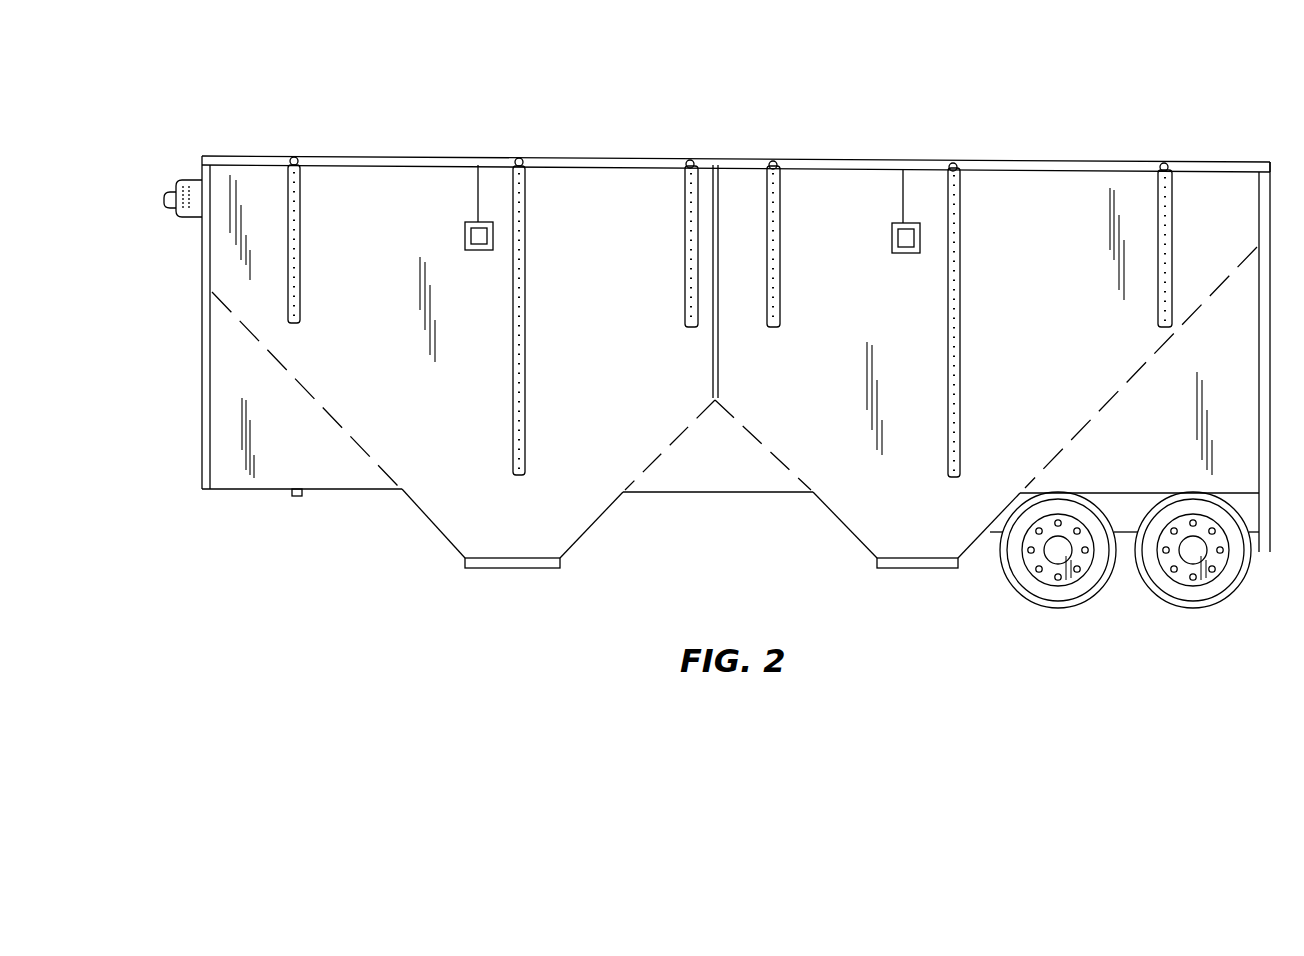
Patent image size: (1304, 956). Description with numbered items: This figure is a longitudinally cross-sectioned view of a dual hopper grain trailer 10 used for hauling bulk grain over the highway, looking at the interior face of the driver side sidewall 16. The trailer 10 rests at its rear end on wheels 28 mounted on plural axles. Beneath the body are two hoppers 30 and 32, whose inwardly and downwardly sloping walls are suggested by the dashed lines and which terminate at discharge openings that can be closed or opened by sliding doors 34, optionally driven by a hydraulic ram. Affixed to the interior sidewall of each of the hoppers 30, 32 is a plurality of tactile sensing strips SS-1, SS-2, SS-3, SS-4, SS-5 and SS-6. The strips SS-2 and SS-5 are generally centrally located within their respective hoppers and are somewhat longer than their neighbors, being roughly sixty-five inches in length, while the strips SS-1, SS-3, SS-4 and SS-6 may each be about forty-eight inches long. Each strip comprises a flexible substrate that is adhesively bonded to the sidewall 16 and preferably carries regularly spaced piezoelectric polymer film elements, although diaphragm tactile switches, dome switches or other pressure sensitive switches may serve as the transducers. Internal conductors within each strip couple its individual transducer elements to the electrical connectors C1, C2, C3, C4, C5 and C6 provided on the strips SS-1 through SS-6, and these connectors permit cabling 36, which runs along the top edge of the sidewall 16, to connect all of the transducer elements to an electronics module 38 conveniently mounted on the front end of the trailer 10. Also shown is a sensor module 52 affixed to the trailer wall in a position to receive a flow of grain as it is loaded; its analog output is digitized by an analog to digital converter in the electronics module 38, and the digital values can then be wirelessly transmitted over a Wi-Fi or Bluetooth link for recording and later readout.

The trailer 10 is at (1030, 115).
The driver side sidewall 16 is at (614, 259).
The wheels 28 is at (1140, 606).
The hopper 30 is at (580, 537).
The hopper 32 is at (850, 537).
The sliding doors 34 is at (531, 569).
The cabling 36 is at (405, 157).
The electronics module 38 is at (186, 178).
The sensor module 52 is at (470, 222).
The electrical connector C1 is at (293, 160).
The electrical connector C2 is at (519, 162).
The electrical connector C3 is at (689, 165).
The electrical connector C4 is at (772, 165).
The electrical connector C5 is at (952, 166).
The electrical connector C6 is at (1163, 166).
The sensing strip SS-1 is at (289, 258).
The sensing strip SS-2 is at (516, 334).
The sensing strip SS-3 is at (680, 260).
The sensing strip SS-4 is at (773, 260).
The sensing strip SS-5 is at (946, 337).
The sensing strip SS-6 is at (1141, 263).